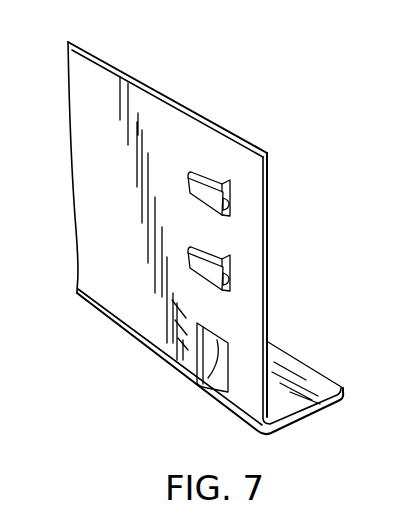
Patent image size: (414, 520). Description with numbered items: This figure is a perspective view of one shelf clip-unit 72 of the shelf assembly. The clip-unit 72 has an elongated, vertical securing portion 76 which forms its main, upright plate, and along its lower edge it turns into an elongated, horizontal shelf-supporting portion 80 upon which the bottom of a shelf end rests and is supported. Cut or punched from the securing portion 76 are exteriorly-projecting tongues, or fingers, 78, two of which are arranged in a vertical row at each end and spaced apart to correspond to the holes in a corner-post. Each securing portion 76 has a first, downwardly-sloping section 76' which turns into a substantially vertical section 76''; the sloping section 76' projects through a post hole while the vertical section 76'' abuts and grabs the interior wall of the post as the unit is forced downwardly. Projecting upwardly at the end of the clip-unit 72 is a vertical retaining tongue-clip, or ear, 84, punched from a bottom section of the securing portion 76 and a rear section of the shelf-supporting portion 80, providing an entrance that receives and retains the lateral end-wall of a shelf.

The shelf clip-unit 72 is at (186, 81).
The securing portion 76 is at (148, 192).
The downwardly-sloping section 76' is at (247, 148).
The vertical section 76'' is at (149, 308).
The tongue or finger 78 is at (199, 199).
The shelf-supporting portion 80 is at (300, 371).
The retaining tongue-clip 84 is at (218, 385).